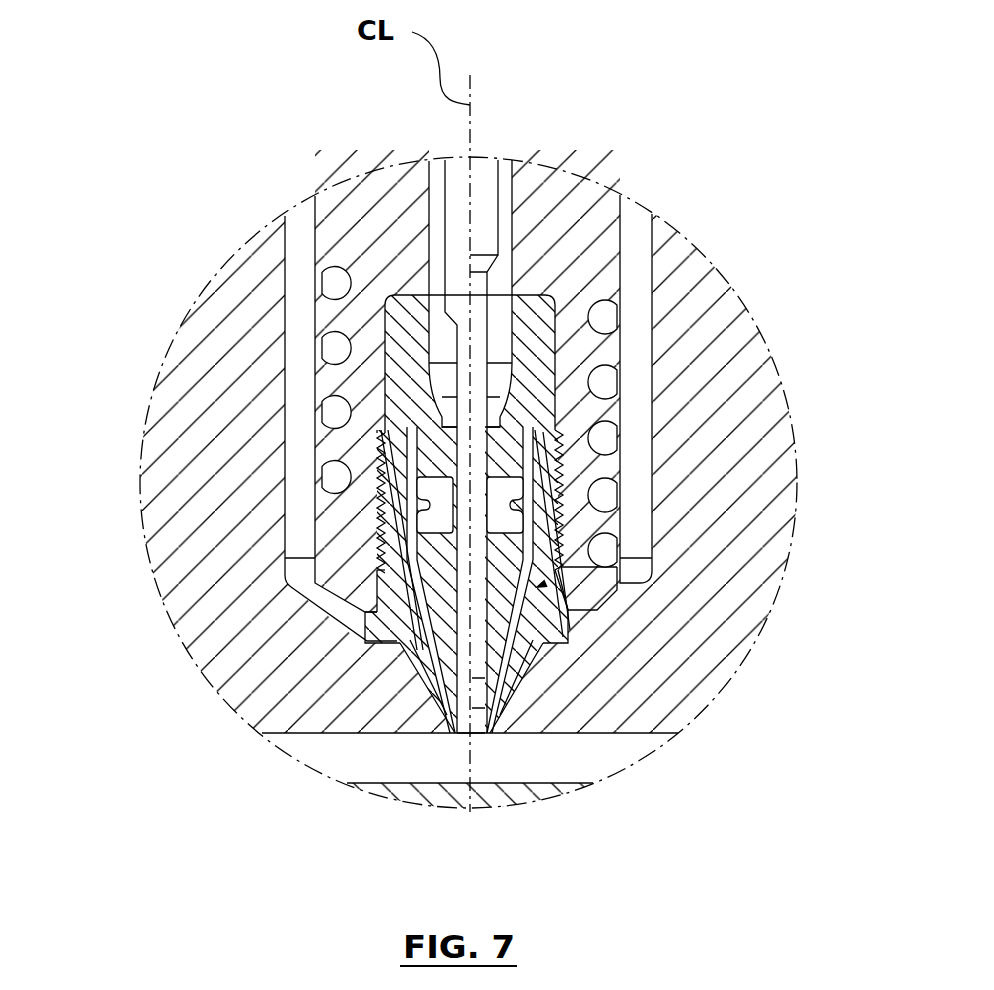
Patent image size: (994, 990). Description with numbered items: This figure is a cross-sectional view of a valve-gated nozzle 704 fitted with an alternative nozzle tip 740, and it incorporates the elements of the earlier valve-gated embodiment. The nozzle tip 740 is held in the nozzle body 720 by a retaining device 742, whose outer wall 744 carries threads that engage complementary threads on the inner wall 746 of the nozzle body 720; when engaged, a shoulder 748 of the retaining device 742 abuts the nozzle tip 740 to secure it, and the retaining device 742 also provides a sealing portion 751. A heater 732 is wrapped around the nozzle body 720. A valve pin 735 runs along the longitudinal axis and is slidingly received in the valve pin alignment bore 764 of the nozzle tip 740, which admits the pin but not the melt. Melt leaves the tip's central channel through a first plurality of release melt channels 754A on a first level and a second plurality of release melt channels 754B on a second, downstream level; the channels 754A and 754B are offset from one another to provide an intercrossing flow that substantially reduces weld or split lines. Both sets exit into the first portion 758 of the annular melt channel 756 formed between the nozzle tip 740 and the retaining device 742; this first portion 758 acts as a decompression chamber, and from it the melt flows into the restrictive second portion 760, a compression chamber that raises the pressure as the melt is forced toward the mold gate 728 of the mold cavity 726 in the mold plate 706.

The valve-gated nozzle 704 is at (590, 215).
The mold plate 706 is at (665, 705).
The nozzle body 720 is at (553, 195).
The mold cavity 726 is at (610, 750).
The mold gate 728 is at (483, 735).
The heater 732 is at (662, 282).
The valve pin 735 is at (485, 185).
The nozzle tip 740 is at (617, 320).
The retaining device 742 is at (520, 627).
The outer wall of retaining device 744 is at (378, 527).
The inner wall of nozzle body 746 is at (376, 574).
The shoulder 748 is at (393, 500).
The sealing portion 751 is at (367, 640).
The release melt channels on first level 754A is at (565, 455).
The release melt channels on second level 754B is at (515, 520).
The annular melt channel 756 is at (540, 588).
The first portion of annular melt channel 758 is at (512, 488).
The second portion of annular melt channel 760 is at (588, 614).
The valve pin alignment bore 764 is at (537, 343).